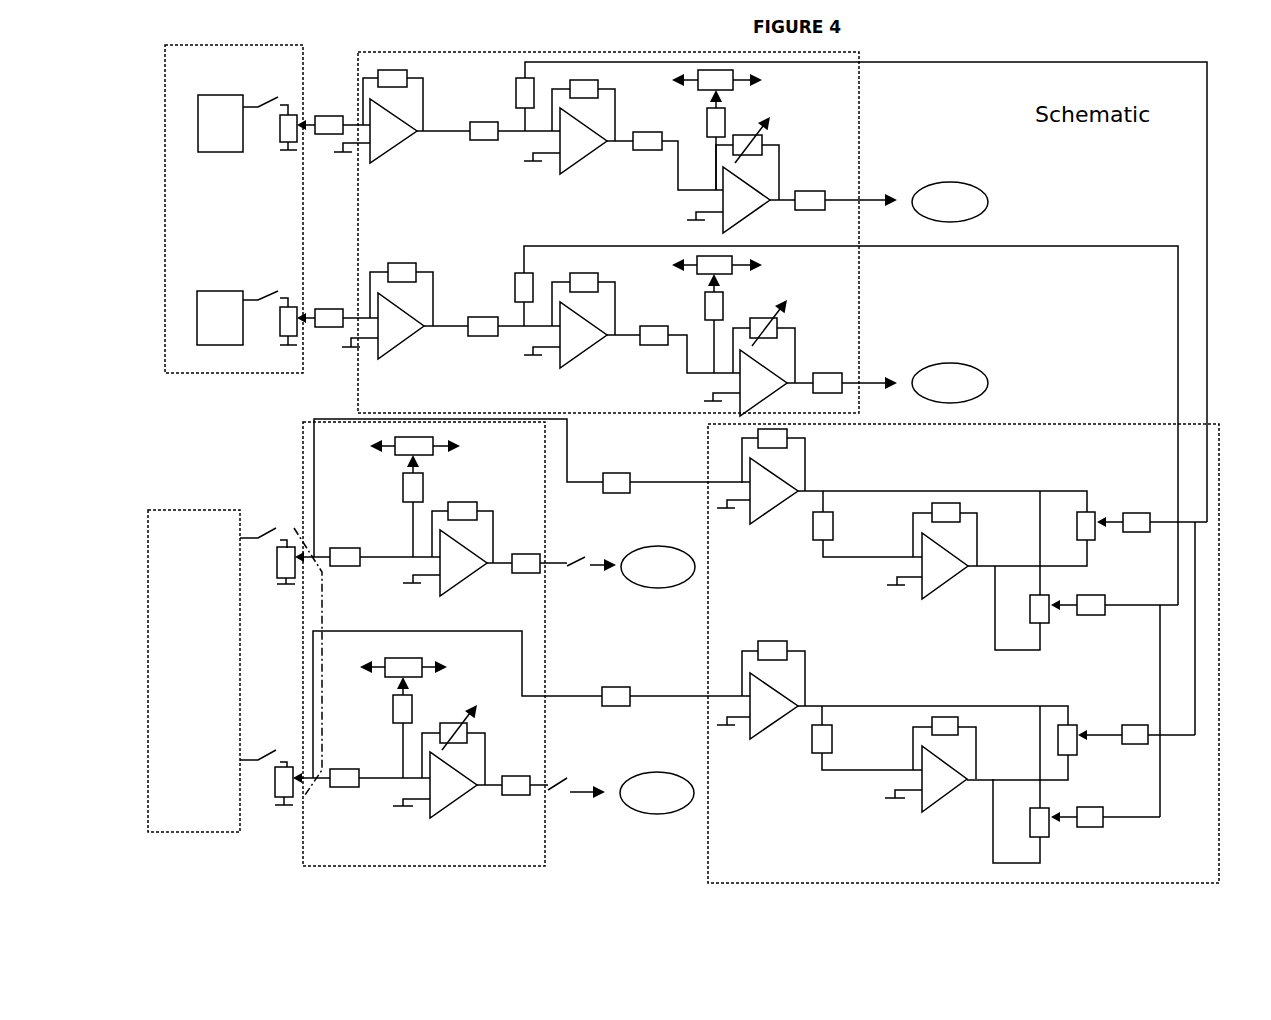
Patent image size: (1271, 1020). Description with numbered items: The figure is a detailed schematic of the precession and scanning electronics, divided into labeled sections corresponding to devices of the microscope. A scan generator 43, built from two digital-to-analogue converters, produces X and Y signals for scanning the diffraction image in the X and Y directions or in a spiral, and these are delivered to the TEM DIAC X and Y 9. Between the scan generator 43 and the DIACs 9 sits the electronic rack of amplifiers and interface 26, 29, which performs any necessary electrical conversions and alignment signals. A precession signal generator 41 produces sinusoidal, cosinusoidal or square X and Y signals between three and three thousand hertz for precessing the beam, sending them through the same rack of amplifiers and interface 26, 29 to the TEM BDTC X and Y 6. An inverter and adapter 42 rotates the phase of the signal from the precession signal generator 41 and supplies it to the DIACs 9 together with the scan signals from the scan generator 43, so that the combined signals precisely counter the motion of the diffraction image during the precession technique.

The scan generator 43 is at (163, 163).
The electronic rack of amplifiers and interface 26 is at (478, 50).
The electronic rack of amplifiers and interface 29 is at (366, 874).
The DIAC X and Y 9 is at (988, 188).
The BDTC X and Y 6 is at (654, 594).
The precession signal generator 41 is at (146, 633).
The inverter and adapter 42 is at (1226, 622).